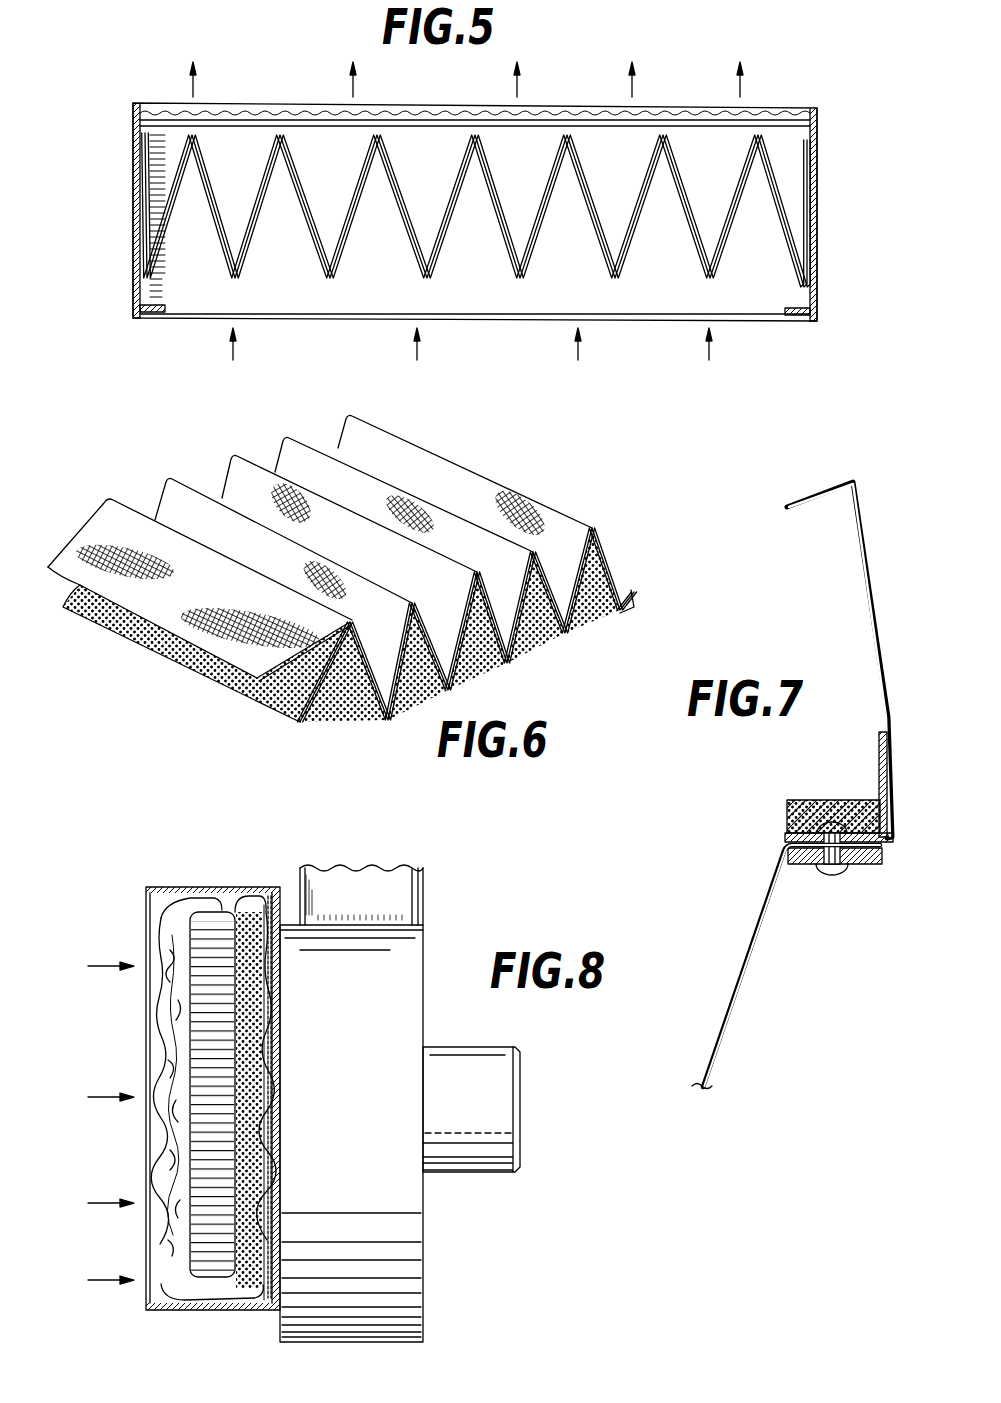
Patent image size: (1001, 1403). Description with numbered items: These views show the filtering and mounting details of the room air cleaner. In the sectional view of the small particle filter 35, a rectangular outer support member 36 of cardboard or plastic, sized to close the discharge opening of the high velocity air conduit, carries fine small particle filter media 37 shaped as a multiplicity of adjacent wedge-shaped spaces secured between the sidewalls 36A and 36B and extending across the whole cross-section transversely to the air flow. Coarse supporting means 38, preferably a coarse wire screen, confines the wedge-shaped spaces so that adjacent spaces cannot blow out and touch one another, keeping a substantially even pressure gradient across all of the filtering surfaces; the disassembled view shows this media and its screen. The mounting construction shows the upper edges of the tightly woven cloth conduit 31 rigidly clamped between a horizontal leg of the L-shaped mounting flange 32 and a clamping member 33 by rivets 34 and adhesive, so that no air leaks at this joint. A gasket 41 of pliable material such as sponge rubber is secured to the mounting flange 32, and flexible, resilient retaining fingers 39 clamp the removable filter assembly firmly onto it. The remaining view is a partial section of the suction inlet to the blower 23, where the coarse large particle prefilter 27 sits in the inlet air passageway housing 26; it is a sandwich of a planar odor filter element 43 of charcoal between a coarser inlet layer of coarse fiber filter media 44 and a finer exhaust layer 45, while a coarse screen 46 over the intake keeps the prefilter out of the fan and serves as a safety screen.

In FIG. 8, the blower 23 is at (410, 958).
In FIG. 8, the inlet air passageway housing 26 is at (178, 887).
In FIG. 8, the coarse large particle prefilter 27 is at (221, 1083).
In FIG. 7, the funnel-shaped conduit means 31 is at (724, 1028).
In FIG. 7, the mounting flange 32 is at (886, 783).
In FIG. 7, the clamping member 33 is at (860, 866).
In FIG. 7, the rivets 34 is at (828, 873).
In FIG. 5, the small particle filter 35 is at (269, 87).
In FIG. 5, the outer support member 36 is at (800, 110).
In FIG. 5, the sidewall 36A is at (133, 212).
In FIG. 5, the sidewall 36B is at (818, 192).
In FIG. 5, the fine small particle filter media 37 is at (165, 248).
In FIG. 6, the fine small particle filter media 37 is at (302, 725).
In FIG. 5, the coarse supporting means 38 is at (213, 198).
In FIG. 6, the coarse supporting means 38 is at (90, 532).
In FIG. 7, the retaining fingers 39 is at (898, 608).
In FIG. 7, the gasket 41 is at (812, 802).
In FIG. 8, the odor filter element 43 is at (216, 937).
In FIG. 8, the coarse fiber filter media 44 is at (177, 1015).
In FIG. 8, the coarse fiber filter media 45 is at (247, 928).
In FIG. 8, the coarse screen 46 is at (276, 1160).